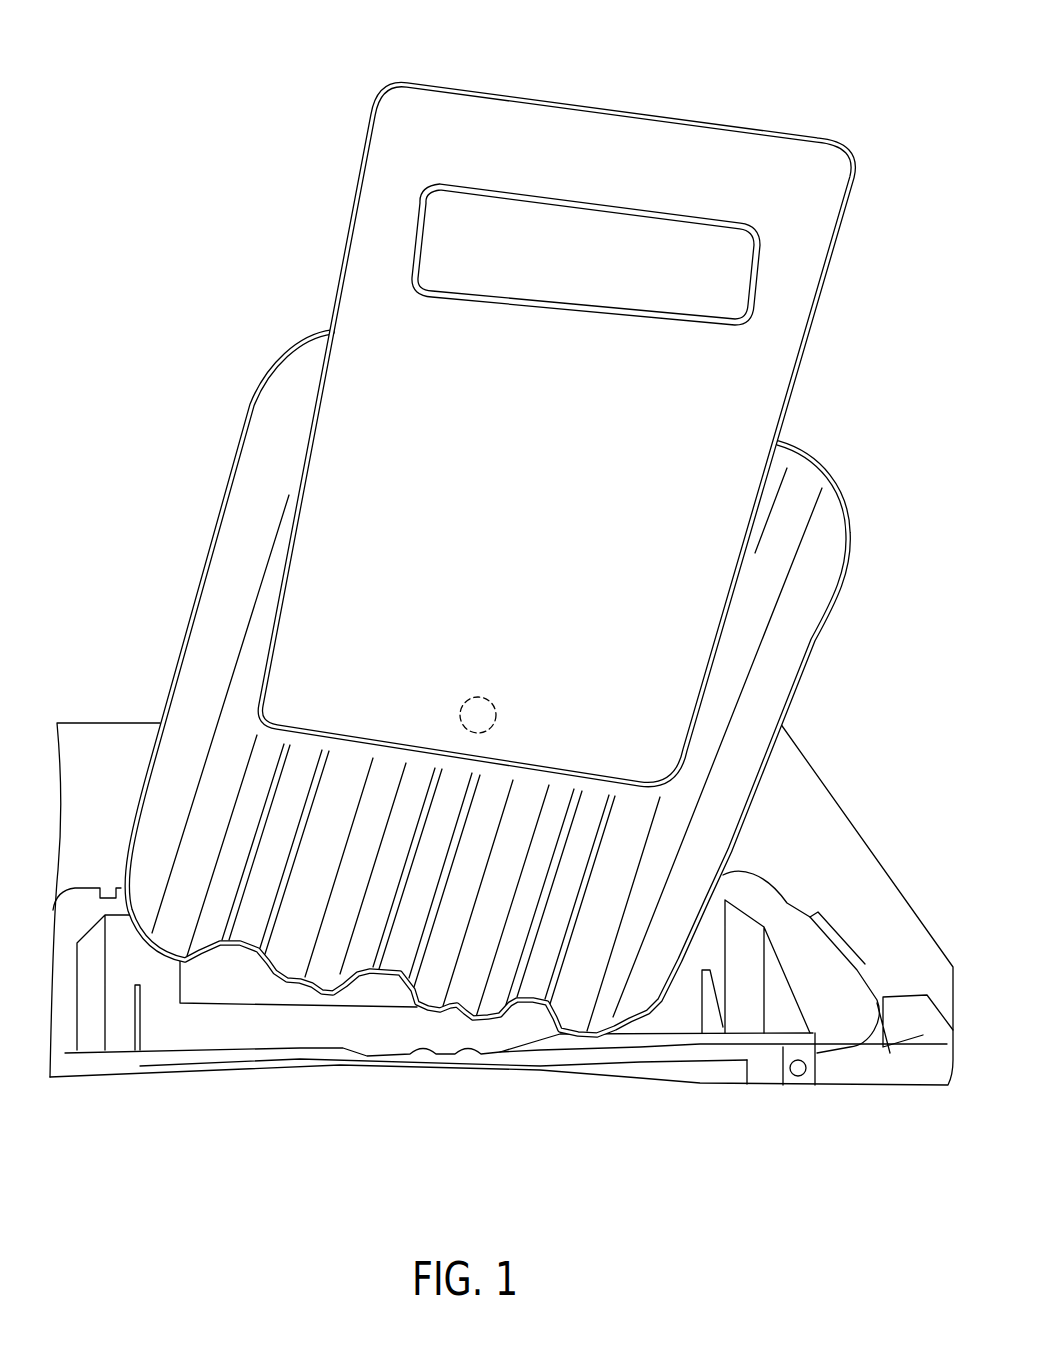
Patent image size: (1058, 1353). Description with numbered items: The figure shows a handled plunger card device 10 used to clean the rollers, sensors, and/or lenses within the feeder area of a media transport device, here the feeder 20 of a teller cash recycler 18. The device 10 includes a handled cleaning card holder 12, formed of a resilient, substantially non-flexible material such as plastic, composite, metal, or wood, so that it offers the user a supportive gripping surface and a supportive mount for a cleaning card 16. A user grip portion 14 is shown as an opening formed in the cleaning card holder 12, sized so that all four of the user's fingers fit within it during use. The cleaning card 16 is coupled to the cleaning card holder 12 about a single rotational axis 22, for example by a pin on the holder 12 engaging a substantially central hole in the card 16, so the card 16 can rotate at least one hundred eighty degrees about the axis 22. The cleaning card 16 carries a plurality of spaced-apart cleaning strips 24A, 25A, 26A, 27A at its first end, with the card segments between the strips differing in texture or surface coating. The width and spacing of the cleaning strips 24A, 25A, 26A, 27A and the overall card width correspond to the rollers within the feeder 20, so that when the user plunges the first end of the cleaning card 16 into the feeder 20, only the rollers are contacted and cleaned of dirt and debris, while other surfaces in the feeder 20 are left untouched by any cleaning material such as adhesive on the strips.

The handled plunger card device 10 is at (501, 593).
The handled cleaning card holder 12 is at (556, 435).
The user grip portion 14 is at (688, 307).
The cleaning card 16 is at (486, 757).
The teller cash recycler 18 is at (857, 860).
The feeder 20 is at (687, 1023).
The rotational axis 22 is at (472, 697).
The cleaning strip 24A is at (198, 890).
The cleaning strip 25A is at (340, 930).
The cleaning strip 26A is at (482, 937).
The cleaning strip 27A is at (617, 952).